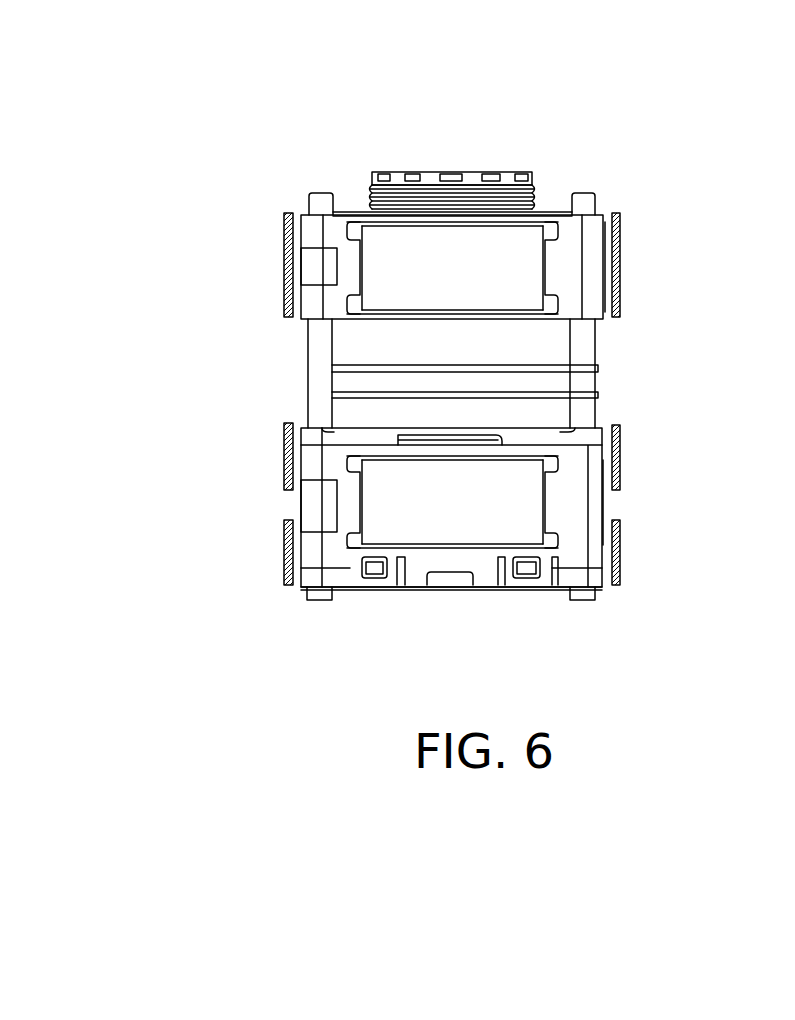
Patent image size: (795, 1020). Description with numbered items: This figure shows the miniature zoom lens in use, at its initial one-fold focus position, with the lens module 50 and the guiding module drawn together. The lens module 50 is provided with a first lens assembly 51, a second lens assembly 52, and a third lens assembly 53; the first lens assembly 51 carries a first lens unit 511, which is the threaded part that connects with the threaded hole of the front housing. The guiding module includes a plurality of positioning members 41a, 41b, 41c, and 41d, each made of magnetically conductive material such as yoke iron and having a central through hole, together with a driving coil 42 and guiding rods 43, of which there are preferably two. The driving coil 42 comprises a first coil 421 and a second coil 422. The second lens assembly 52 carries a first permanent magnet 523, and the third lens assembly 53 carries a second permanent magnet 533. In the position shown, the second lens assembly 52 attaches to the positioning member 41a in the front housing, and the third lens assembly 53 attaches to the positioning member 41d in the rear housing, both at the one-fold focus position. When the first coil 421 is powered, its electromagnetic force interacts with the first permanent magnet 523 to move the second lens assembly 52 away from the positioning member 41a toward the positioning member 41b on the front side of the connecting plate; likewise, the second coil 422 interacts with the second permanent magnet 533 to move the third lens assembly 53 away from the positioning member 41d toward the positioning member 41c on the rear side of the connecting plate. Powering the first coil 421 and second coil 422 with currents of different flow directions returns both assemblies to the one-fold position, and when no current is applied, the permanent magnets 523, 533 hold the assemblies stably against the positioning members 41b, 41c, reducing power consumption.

The lens module 50 is at (172, 115).
The first lens assembly 51 is at (352, 165).
The first lens unit 511 is at (472, 177).
The positioning member 41a is at (597, 213).
The positioning member 41b is at (600, 368).
The positioning member 41c is at (600, 395).
The positioning member 41d is at (520, 590).
The driving coil 42 is at (695, 243).
The first coil 421 is at (622, 265).
The second coil 422 is at (618, 543).
The guiding rod 43 is at (322, 194).
The second lens assembly 52 is at (282, 334).
The first permanent magnet 523 is at (395, 302).
The third lens assembly 53 is at (272, 509).
The second permanent magnet 533 is at (425, 542).